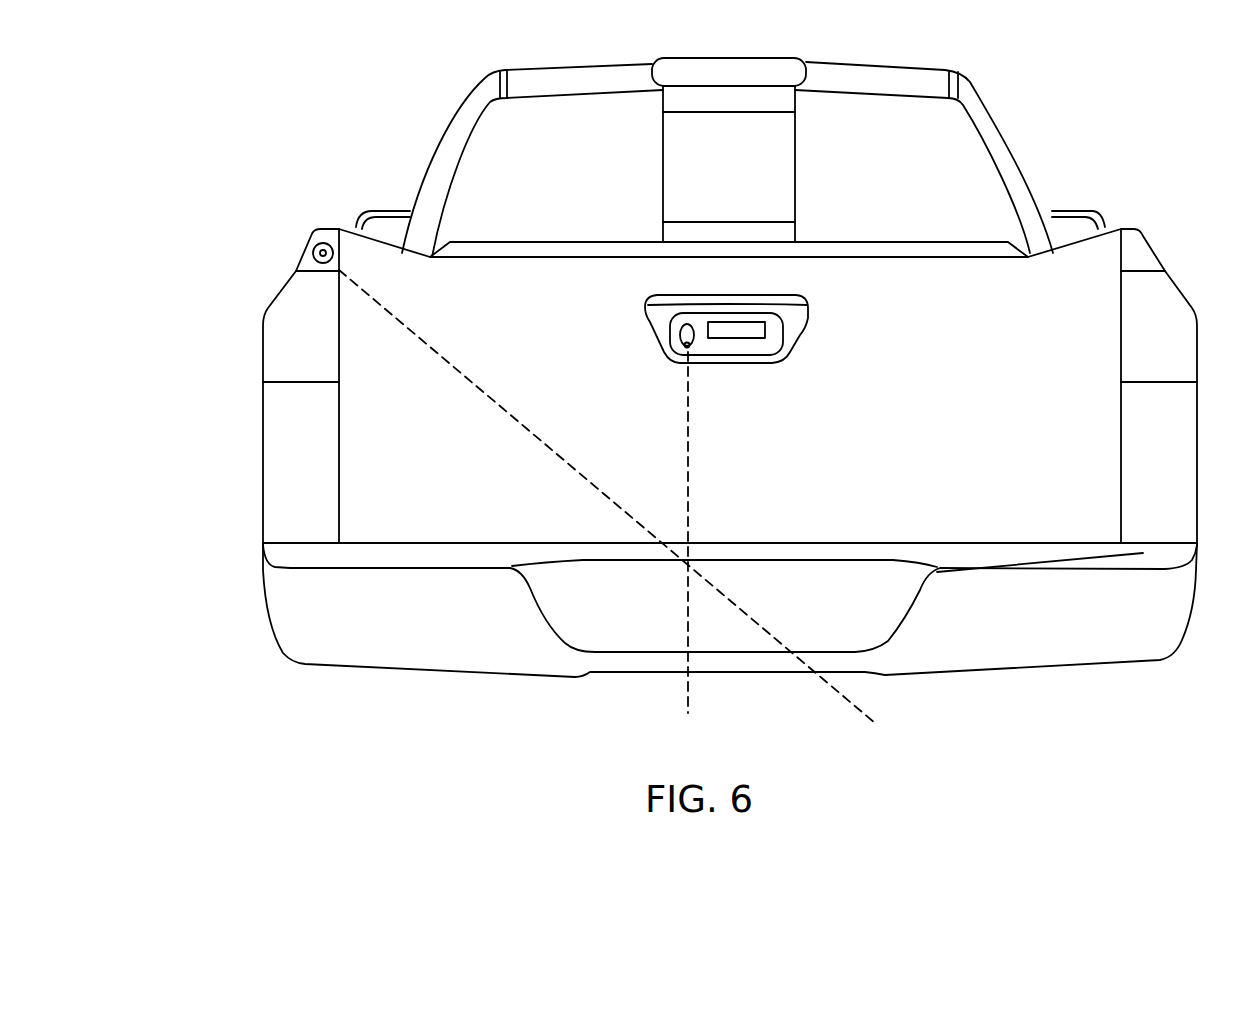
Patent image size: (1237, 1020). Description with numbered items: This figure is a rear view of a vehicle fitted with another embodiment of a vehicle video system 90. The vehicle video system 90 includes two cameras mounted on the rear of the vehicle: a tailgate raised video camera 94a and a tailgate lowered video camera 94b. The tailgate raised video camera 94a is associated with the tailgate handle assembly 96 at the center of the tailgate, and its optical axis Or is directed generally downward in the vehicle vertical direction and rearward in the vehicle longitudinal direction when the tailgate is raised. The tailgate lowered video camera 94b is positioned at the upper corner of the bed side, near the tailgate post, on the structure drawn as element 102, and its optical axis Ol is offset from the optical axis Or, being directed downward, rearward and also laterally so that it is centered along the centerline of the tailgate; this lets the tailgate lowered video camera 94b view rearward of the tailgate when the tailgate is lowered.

The vehicle video system 90 is at (582, 284).
The tailgate handle assembly 96 is at (817, 336).
The tailgate raised video camera 94a is at (681, 342).
The tailgate lowered video camera 94b is at (314, 252).
The bed side panel 102 is at (270, 416).
The optical axis of the tailgate raised video camera Or is at (690, 630).
The optical axis of the tailgate lowered video camera Ol is at (868, 713).